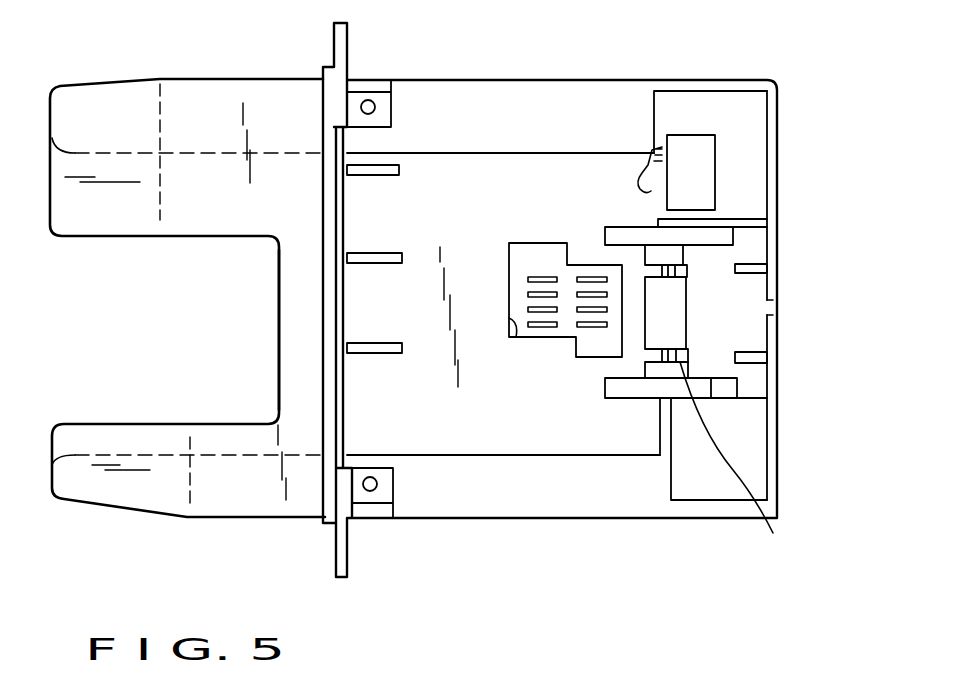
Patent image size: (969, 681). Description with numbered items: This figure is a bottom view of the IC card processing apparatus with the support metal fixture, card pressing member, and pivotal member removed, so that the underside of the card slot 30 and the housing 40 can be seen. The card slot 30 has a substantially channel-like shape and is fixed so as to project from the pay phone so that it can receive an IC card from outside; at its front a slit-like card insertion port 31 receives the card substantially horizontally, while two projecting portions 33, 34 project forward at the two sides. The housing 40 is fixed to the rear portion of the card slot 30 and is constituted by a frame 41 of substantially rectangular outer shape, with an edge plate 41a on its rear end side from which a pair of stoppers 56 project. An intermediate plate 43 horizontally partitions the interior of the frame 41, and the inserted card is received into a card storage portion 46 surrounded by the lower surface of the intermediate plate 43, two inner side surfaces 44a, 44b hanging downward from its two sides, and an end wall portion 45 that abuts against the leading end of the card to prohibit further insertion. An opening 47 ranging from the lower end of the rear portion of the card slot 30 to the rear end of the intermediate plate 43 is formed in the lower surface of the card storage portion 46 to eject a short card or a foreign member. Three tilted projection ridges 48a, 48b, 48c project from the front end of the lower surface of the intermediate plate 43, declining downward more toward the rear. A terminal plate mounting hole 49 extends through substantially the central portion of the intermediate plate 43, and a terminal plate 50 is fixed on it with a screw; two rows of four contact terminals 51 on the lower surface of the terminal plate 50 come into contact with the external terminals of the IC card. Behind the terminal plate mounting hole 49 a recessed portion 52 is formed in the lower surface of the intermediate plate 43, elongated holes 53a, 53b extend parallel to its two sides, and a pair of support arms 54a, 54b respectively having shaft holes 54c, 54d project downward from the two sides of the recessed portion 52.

The card slot 30 is at (182, 74).
The card insertion port 31 is at (279, 350).
The projecting portion 33 is at (268, 95).
The projecting portion 34 is at (249, 500).
The housing 40 is at (602, 74).
The frame 41 is at (774, 162).
The edge plate 41a is at (775, 306).
The intermediate plate 43 is at (572, 402).
The inner side surface 44a is at (512, 448).
The inner side surface 44b is at (512, 158).
The end wall portion 45 is at (655, 428).
The card storage portion 46 is at (445, 428).
The opening 47 is at (547, 442).
The tilted projection ridge 48a is at (392, 165).
The tilted projection ridge 48b is at (393, 253).
The tilted projection ridge 48c is at (386, 353).
The terminal plate mounting hole 49 is at (510, 338).
The terminal plate 50 is at (516, 265).
The contact terminals 51 is at (548, 276).
The recessed portion 52 is at (652, 322).
The elongated hole 53a is at (737, 242).
The elongated hole 53b is at (715, 395).
The support arm 54a is at (682, 278).
The support arm 54b is at (743, 468).
The shaft hole 54c is at (665, 264).
The shaft hole 54d is at (672, 362).
The stoppers 56 is at (752, 273).